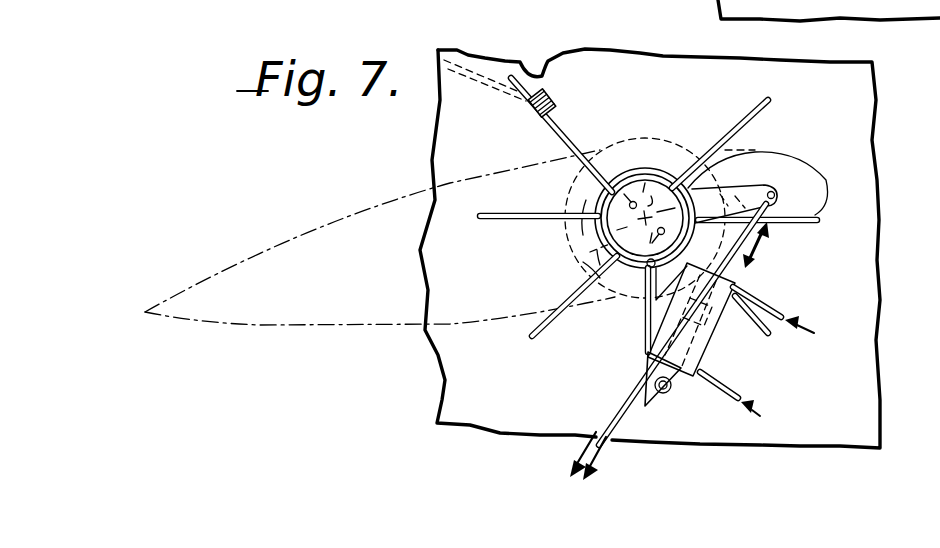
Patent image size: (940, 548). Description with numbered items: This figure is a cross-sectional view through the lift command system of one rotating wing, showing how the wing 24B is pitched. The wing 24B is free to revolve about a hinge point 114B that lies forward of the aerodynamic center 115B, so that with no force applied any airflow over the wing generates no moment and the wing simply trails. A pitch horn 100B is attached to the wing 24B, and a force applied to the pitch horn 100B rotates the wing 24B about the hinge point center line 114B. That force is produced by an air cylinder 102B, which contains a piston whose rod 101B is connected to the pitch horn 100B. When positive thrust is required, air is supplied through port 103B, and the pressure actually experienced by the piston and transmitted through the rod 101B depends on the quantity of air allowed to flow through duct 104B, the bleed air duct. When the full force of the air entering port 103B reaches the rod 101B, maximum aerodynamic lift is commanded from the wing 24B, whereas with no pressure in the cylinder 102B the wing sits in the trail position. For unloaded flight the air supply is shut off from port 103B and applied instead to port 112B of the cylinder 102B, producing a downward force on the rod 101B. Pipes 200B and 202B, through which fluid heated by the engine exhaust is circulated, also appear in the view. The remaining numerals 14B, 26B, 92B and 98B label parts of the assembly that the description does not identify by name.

The broken-away portion of propeller hub 14B is at (544, 56).
The wing 24B is at (337, 237).
The hub center 26B is at (651, 196).
The radial spoke rods 92B is at (524, 218).
The support post 98B is at (648, 332).
The pitch horn 100B is at (740, 200).
The rod 101B is at (766, 232).
The air cylinder 102B is at (690, 340).
The port 103B is at (706, 378).
The duct 104B is at (603, 410).
The port 112B is at (748, 292).
The hinge point 114B is at (607, 252).
The aerodynamic center 115B is at (539, 272).
The pipe 200B is at (615, 182).
The pipe 202B is at (650, 268).